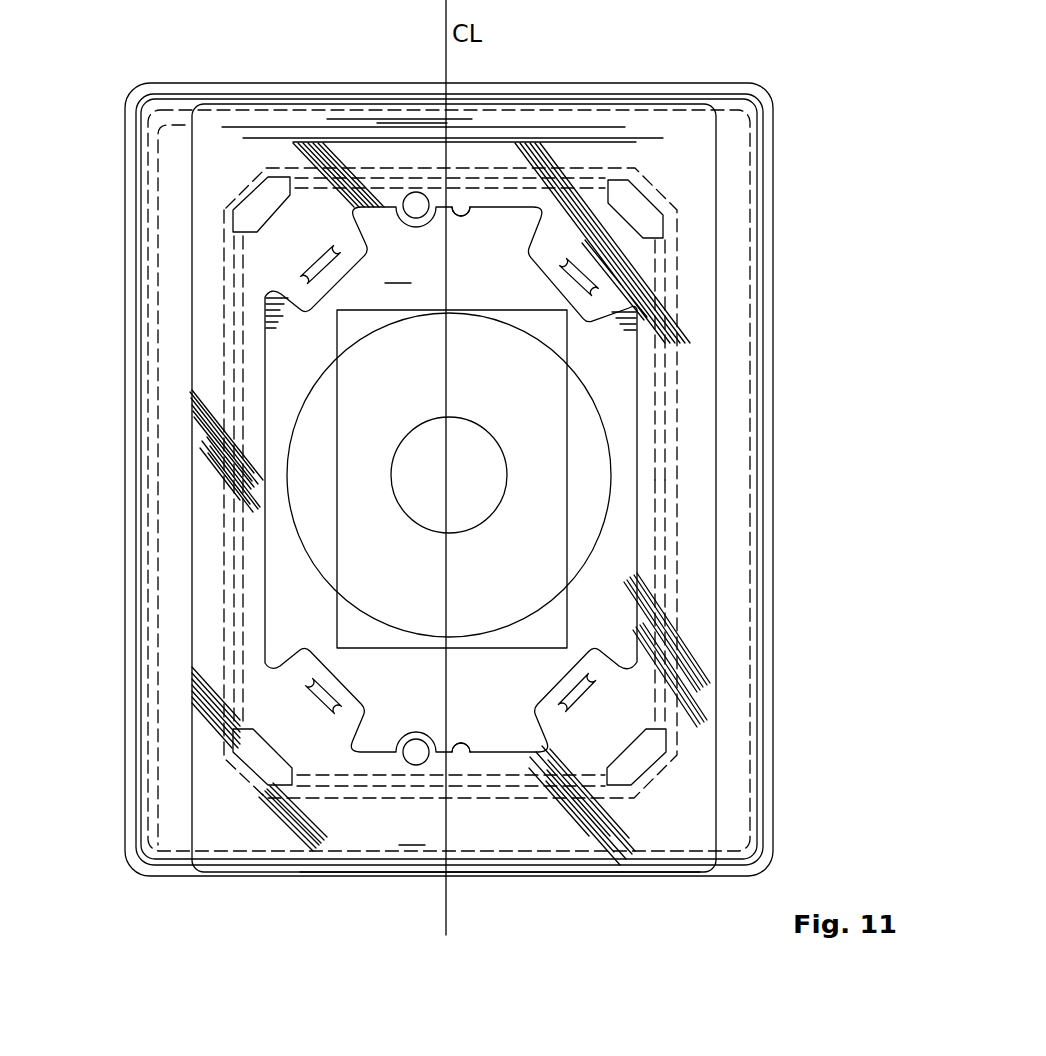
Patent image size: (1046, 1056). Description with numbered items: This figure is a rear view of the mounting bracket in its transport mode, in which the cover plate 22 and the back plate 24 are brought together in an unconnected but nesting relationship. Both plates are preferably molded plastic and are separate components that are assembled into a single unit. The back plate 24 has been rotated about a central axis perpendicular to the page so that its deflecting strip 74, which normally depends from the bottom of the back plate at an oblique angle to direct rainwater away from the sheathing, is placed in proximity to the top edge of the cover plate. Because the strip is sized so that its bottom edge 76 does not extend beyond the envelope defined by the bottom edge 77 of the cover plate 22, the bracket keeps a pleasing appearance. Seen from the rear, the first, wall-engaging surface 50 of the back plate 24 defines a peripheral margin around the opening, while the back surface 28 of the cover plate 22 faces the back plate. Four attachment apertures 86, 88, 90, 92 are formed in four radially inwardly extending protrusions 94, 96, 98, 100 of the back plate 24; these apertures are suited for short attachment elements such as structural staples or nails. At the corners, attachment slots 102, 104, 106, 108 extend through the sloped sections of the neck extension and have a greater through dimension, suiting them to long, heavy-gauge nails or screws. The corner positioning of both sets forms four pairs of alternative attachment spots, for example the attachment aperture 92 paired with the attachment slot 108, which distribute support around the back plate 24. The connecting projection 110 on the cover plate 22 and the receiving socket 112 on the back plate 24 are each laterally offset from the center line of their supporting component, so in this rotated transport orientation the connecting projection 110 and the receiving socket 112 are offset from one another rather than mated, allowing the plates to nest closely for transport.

The cover plate 22 is at (767, 478).
The back plate 24 is at (203, 483).
The back surface 28 is at (451, 479).
The first, wall-engaging surface 50 is at (450, 507).
The deflecting strip 74 is at (263, 118).
The bottom edge 76 is at (630, 93).
The bottom edge 77 is at (717, 880).
The attachment aperture 86 is at (603, 670).
The attachment aperture 88 is at (320, 692).
The attachment aperture 90 is at (307, 270).
The attachment aperture 92 is at (633, 310).
The radially inwardly extending protrusion 94 is at (627, 713).
The radially inwardly extending protrusion 96 is at (290, 720).
The radially inwardly extending protrusion 98 is at (293, 247).
The radially inwardly extending protrusion 100 is at (640, 267).
The attachment slot 102 is at (642, 755).
The attachment slot 104 is at (262, 763).
The attachment slot 106 is at (270, 197).
The attachment slot 108 is at (637, 215).
The connecting projection 110 is at (460, 750).
The receiving socket 112 is at (407, 757).